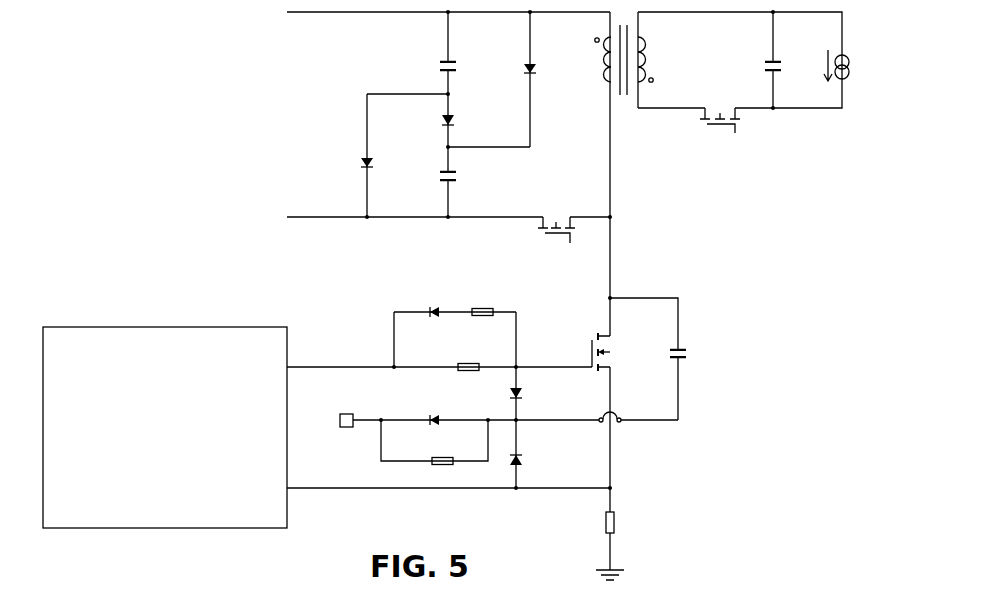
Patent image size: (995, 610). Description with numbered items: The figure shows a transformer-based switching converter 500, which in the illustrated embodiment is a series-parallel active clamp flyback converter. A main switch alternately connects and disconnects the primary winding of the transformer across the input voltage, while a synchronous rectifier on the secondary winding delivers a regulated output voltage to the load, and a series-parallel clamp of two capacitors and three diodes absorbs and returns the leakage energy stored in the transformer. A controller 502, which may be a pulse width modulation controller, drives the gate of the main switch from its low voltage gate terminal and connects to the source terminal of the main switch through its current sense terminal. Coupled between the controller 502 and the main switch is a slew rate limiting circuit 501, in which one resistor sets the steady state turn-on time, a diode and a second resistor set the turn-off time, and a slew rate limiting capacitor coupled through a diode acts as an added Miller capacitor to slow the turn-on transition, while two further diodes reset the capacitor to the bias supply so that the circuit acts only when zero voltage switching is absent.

The transformer-based switching converter 500 is at (240, 114).
The slew rate limiting circuit 501 is at (367, 303).
The controller 502 is at (98, 327).